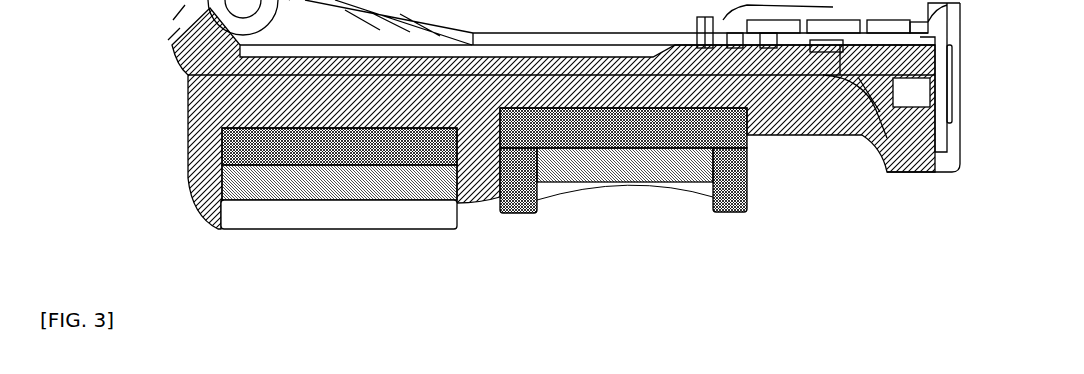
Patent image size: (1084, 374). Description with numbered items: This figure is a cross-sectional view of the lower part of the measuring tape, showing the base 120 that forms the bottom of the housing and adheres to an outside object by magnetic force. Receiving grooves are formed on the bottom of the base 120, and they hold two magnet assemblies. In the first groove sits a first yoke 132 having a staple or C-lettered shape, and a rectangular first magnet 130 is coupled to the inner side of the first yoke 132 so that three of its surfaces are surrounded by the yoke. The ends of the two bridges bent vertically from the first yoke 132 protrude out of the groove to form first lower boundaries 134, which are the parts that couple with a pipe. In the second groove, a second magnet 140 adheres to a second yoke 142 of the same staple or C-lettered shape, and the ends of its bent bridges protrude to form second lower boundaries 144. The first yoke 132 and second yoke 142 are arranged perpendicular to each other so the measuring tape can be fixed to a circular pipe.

The base 120 is at (186, 121).
The first magnet 130 is at (345, 202).
The first yoke 132 is at (392, 200).
The first lower boundaries 134 is at (317, 230).
The second magnet 140 is at (633, 183).
The second yoke 142 is at (671, 188).
The second lower boundaries 144 is at (520, 213).